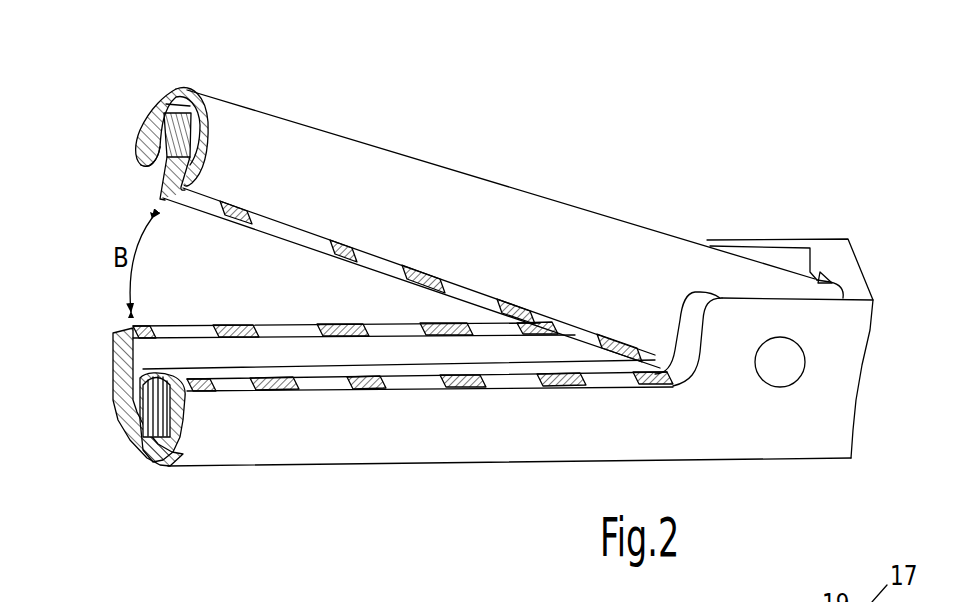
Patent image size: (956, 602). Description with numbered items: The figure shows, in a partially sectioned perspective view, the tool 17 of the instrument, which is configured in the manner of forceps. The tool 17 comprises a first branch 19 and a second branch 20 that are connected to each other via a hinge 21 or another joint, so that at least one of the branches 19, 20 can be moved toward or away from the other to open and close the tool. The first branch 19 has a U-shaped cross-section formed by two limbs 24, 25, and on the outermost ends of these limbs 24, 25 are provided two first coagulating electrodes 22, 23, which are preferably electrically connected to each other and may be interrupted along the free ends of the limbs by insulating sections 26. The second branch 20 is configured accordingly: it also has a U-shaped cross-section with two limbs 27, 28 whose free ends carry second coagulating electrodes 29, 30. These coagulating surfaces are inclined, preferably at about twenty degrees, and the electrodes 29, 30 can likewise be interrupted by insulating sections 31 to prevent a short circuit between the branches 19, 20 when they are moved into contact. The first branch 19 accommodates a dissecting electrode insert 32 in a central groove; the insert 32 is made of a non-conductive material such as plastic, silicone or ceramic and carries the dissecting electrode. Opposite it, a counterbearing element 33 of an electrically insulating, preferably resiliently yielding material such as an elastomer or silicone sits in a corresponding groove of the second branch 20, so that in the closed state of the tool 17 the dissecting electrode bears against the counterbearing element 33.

The tool 17 is at (563, 150).
The first branch 19 is at (347, 121).
The second branch 20 is at (366, 466).
The hinge 21 is at (778, 357).
The first coagulating electrode 22 is at (180, 188).
The first coagulating electrode 23 is at (146, 166).
The limb 24 is at (206, 168).
The limb 25 is at (143, 138).
The insulating sections 26 is at (287, 226).
The limb 27 is at (174, 407).
The limb 28 is at (124, 369).
The second coagulating electrode 29 is at (190, 384).
The second coagulating electrode 30 is at (135, 327).
The insulating sections 31 is at (483, 330).
The dissecting electrode insert 32 is at (178, 107).
The counterbearing element 33 is at (151, 395).